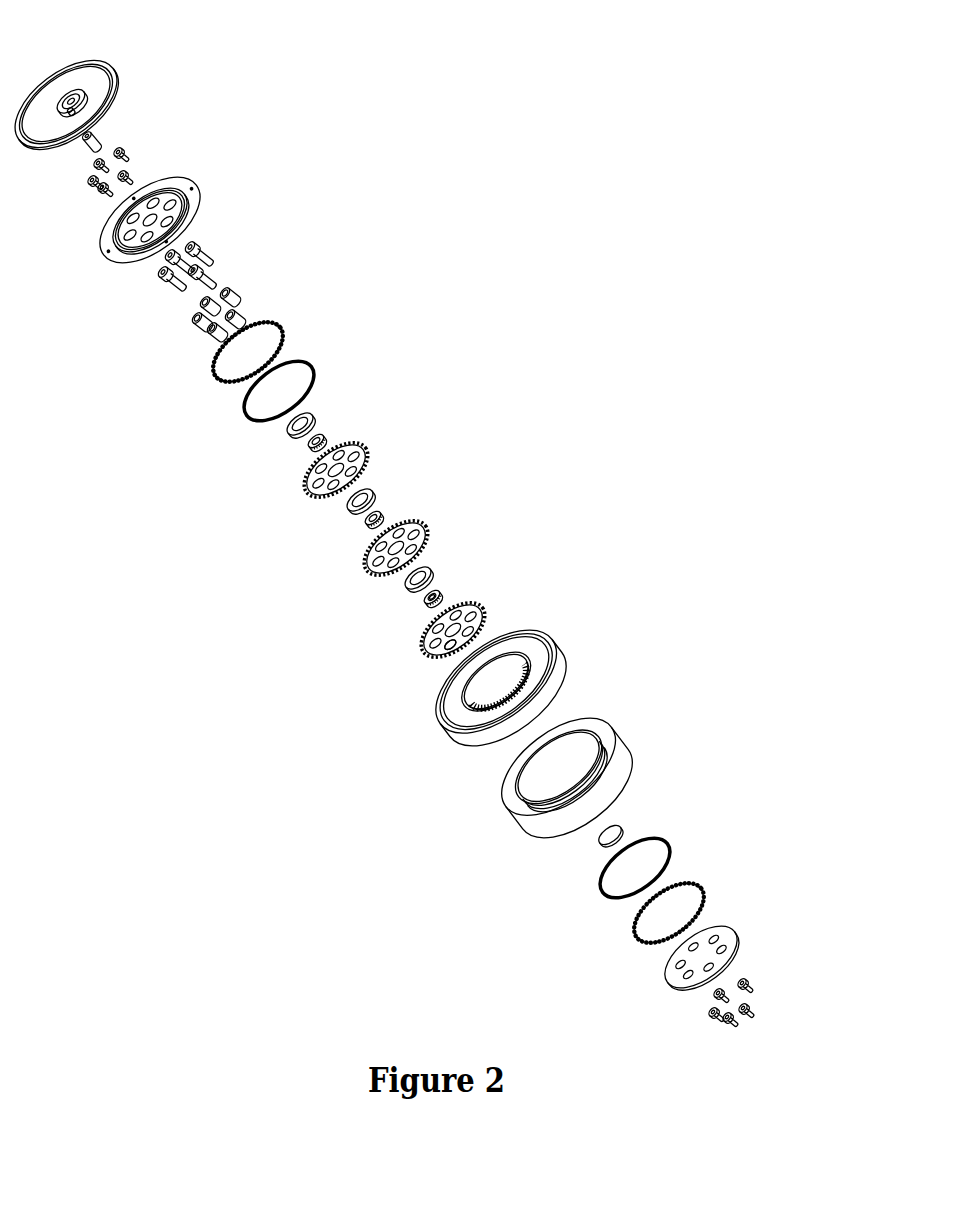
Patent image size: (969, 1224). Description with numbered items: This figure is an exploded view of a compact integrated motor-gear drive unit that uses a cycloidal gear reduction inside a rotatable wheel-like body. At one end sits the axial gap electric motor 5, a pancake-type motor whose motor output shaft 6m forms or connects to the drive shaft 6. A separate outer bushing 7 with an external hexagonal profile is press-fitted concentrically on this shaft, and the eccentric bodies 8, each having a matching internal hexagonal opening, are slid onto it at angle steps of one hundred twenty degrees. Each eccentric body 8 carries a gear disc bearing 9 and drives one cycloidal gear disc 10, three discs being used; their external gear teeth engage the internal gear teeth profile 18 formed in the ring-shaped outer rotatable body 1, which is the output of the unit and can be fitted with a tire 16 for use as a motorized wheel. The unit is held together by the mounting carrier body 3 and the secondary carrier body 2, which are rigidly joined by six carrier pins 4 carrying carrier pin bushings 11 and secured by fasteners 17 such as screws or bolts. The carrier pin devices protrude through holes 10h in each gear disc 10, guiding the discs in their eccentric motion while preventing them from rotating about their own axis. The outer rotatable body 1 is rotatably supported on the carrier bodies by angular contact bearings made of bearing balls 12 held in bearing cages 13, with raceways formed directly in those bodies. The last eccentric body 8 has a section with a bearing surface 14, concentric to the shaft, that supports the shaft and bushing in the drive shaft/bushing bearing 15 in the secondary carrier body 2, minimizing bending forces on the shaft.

The outer rotatable body 1 is at (538, 665).
The secondary carrier body 2 is at (722, 937).
The mounting carrier body 3 is at (147, 192).
The carrier pin 4 is at (195, 250).
The motor 5 is at (56, 78).
The drive shaft 6 is at (77, 123).
The motor output shaft 6m is at (70, 112).
The separate outer bushing 7 is at (97, 140).
The eccentric body 8 is at (317, 437).
The gear disc bearing 9 is at (303, 417).
The cycloidal gear disc 10 is at (356, 452).
The hole 10h is at (433, 642).
The carrier pin bushing 11 is at (222, 290).
The bearing ball 12 is at (272, 325).
The bearing cage 13 is at (295, 362).
The section having a bearing surface 14 is at (440, 594).
The drive shaft/bushing bearing 15 is at (610, 828).
The tire 16 is at (593, 728).
The fastener 17 is at (120, 152).
The internal gear teeth profile 18 is at (493, 718).